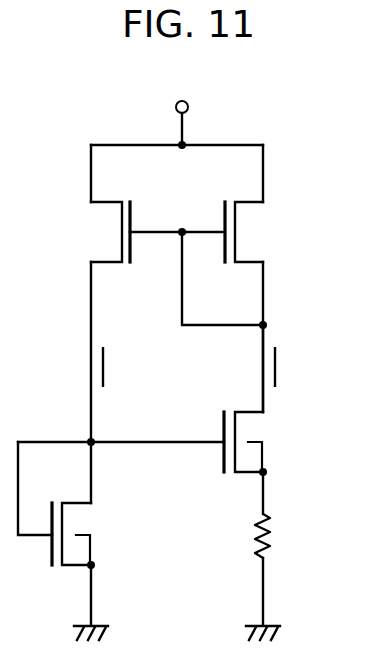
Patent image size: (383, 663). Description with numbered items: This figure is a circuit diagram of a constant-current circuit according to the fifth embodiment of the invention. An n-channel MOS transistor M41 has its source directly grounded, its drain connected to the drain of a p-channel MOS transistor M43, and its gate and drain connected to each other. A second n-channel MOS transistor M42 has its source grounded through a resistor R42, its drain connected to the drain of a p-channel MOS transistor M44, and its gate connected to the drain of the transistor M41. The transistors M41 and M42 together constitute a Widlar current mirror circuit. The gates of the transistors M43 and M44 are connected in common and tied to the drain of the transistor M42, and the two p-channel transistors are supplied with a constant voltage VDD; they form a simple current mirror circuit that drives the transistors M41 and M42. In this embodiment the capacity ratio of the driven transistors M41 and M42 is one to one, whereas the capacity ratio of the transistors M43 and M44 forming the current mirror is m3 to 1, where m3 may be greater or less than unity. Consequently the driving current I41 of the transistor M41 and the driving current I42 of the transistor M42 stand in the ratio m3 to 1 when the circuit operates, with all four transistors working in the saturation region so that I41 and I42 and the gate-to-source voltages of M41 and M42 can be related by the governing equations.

The constant voltage VDD is at (183, 93).
The p-channel MOS transistor M43 is at (122, 232).
The capacity ratio m3 is at (121, 283).
The p-channel MOS transistor M44 is at (235, 232).
The capacity ratio unit 1 is at (251, 283).
The driving current I41 is at (122, 367).
The driving current I42 is at (294, 367).
The n-channel MOS transistor M42 is at (236, 442).
The n-channel MOS transistor M41 is at (63, 535).
The resistor R42 is at (286, 515).